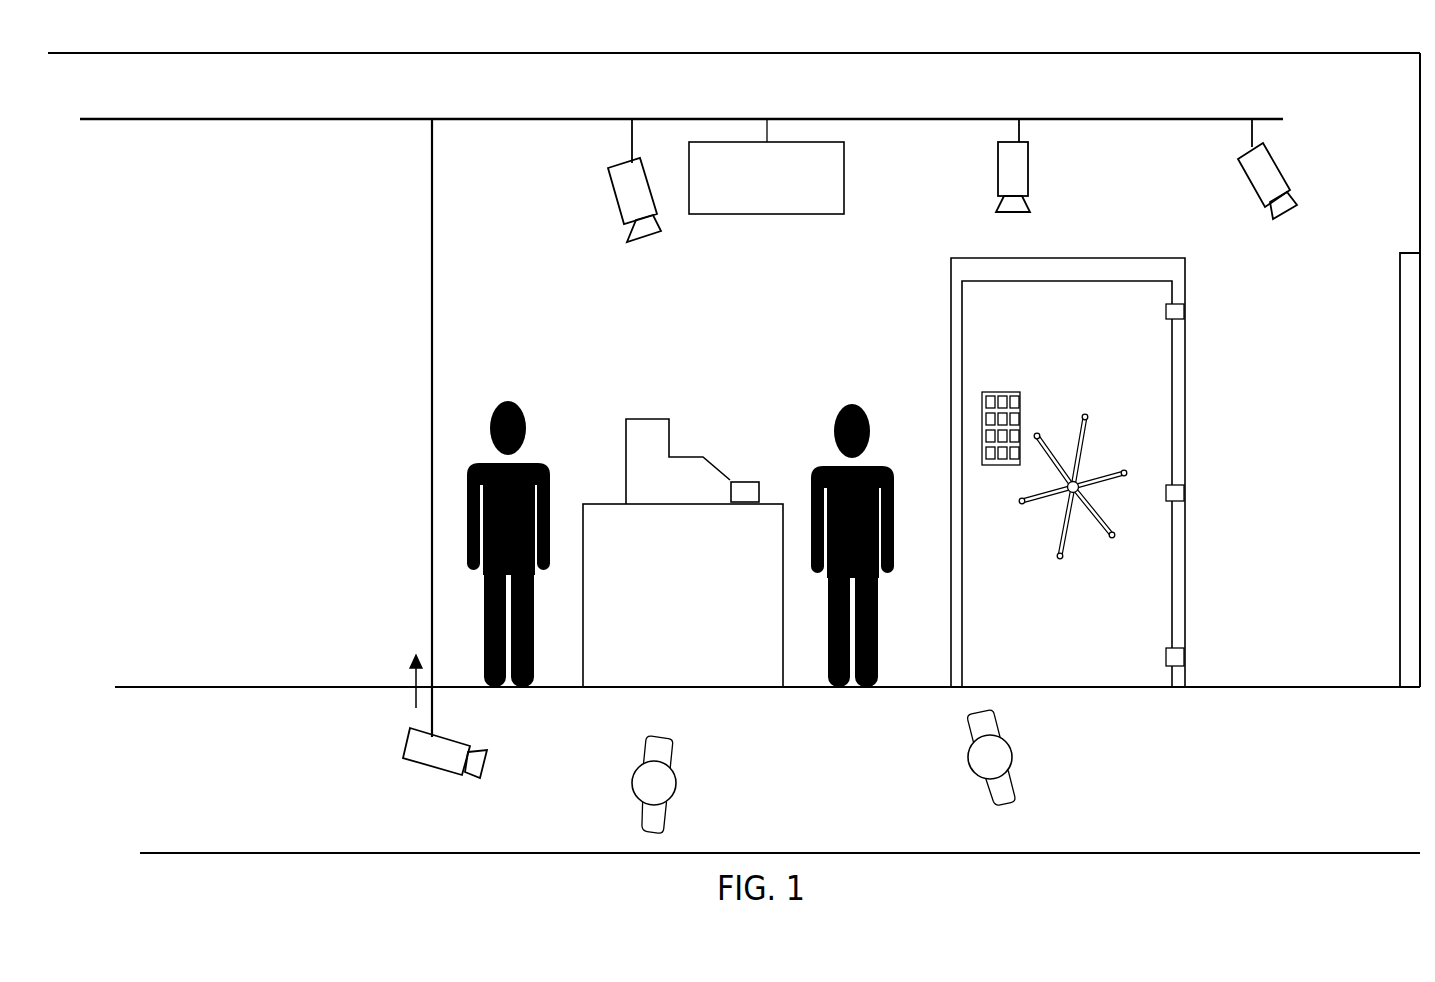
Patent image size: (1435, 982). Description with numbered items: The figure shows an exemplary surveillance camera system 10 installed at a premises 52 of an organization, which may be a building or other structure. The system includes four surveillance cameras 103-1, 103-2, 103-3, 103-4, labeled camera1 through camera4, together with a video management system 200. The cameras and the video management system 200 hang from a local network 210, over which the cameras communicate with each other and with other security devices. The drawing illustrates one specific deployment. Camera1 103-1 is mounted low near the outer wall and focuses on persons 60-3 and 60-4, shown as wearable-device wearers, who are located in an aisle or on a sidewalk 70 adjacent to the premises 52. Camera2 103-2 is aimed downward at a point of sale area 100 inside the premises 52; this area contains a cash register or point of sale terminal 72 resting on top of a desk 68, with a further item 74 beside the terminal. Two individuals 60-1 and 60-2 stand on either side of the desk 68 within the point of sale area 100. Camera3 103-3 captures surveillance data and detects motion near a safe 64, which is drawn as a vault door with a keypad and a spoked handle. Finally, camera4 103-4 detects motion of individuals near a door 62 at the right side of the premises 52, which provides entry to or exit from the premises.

The surveillance camera system 10 is at (210, 709).
The premises 52 is at (383, 53).
The local network 210 is at (583, 119).
The surveillance camera 103-1 is at (403, 758).
The surveillance camera 103-2 is at (612, 192).
The surveillance camera 103-3 is at (1028, 162).
The surveillance camera 103-4 is at (1278, 162).
The video management system 200 is at (766, 166).
The point of sale area 100 is at (580, 312).
The point of sale terminal 72 is at (655, 418).
The input device 74 is at (748, 482).
The desk 68 is at (618, 653).
The individual 60-1 is at (540, 462).
The individual 60-2 is at (880, 626).
The person 60-3 is at (640, 768).
The person 60-4 is at (1006, 746).
The safe 64 is at (1067, 303).
The door 62 is at (1400, 283).
The sidewalk 70 is at (1258, 771).